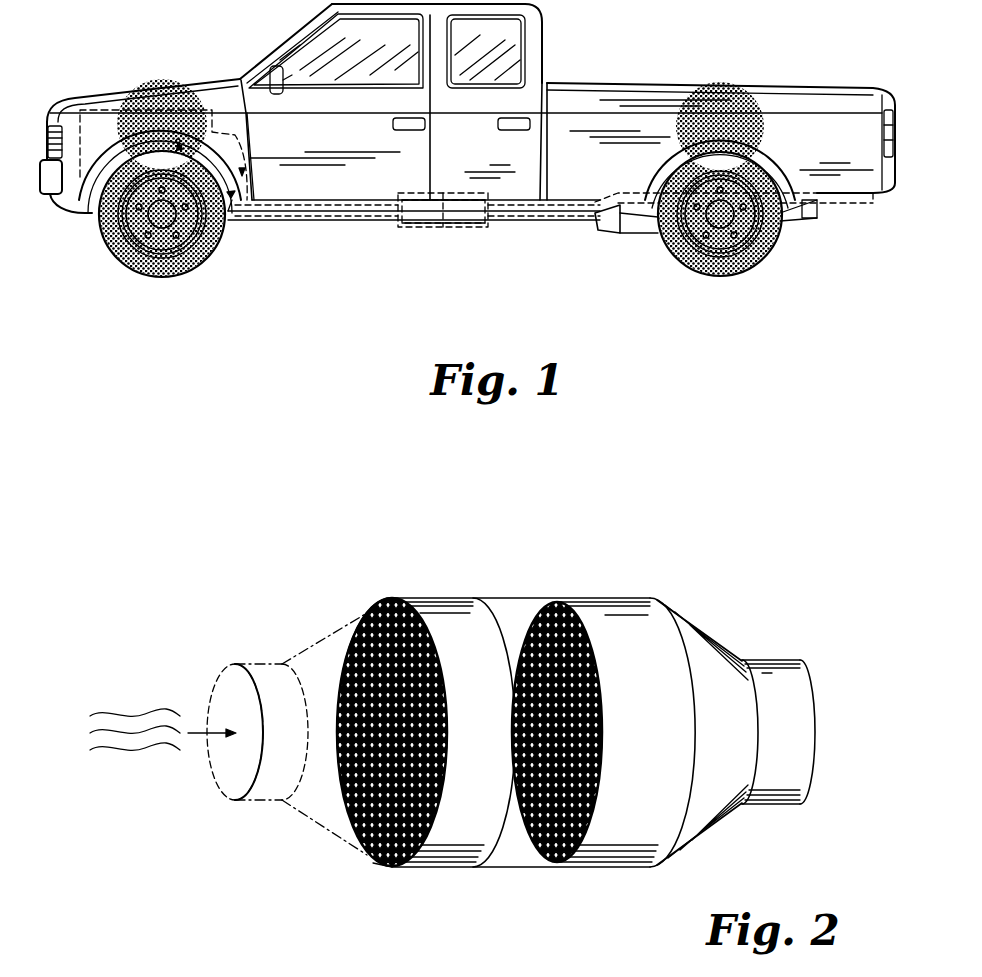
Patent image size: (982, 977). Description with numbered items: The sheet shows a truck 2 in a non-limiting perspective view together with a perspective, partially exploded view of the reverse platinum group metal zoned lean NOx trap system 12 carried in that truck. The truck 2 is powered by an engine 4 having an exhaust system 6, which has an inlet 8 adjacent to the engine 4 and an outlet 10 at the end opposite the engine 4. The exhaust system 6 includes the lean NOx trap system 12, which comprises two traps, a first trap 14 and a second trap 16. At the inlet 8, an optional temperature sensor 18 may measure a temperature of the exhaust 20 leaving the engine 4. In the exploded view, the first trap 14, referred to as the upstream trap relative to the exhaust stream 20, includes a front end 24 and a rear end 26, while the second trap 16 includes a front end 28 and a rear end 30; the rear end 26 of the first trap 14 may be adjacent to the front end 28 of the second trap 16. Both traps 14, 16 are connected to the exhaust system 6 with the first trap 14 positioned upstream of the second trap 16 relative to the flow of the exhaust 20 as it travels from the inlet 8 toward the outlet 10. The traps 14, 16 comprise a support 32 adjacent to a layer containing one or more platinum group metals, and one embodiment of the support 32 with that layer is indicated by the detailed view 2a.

In FIG. 1, the truck 2 is at (140, 80).
In FIG. 1, the engine 4 is at (182, 106).
In FIG. 1, the exhaust system 6 is at (224, 229).
In FIG. 2, the exhaust system 6 is at (252, 807).
In FIG. 1, the inlet 8 is at (141, 218).
In FIG. 1, the outlet 10 is at (851, 212).
In FIG. 1, the reverse platinum group metal lean NOx trap system 12 is at (406, 233).
In FIG. 2, the reverse platinum group metal lean NOx trap system 12 is at (428, 598).
In FIG. 1, the first trap 14 is at (428, 232).
In FIG. 2, the first trap 14 is at (458, 845).
In FIG. 1, the second trap 16 is at (468, 232).
In FIG. 2, the second trap 16 is at (612, 845).
In FIG. 1, the temperature sensor 18 is at (179, 146).
In FIG. 1, the exhaust 20 is at (238, 158).
In FIG. 2, the exhaust 20 is at (135, 705).
In FIG. 2, the front end 24 is at (390, 597).
In FIG. 2, the rear end 26 is at (473, 598).
In FIG. 2, the front end 28 is at (543, 599).
In FIG. 2, the rear end 30 is at (641, 598).
In FIG. 2, the support 32 is at (352, 628).
In FIG. 2, the detailed view 2a is at (373, 863).